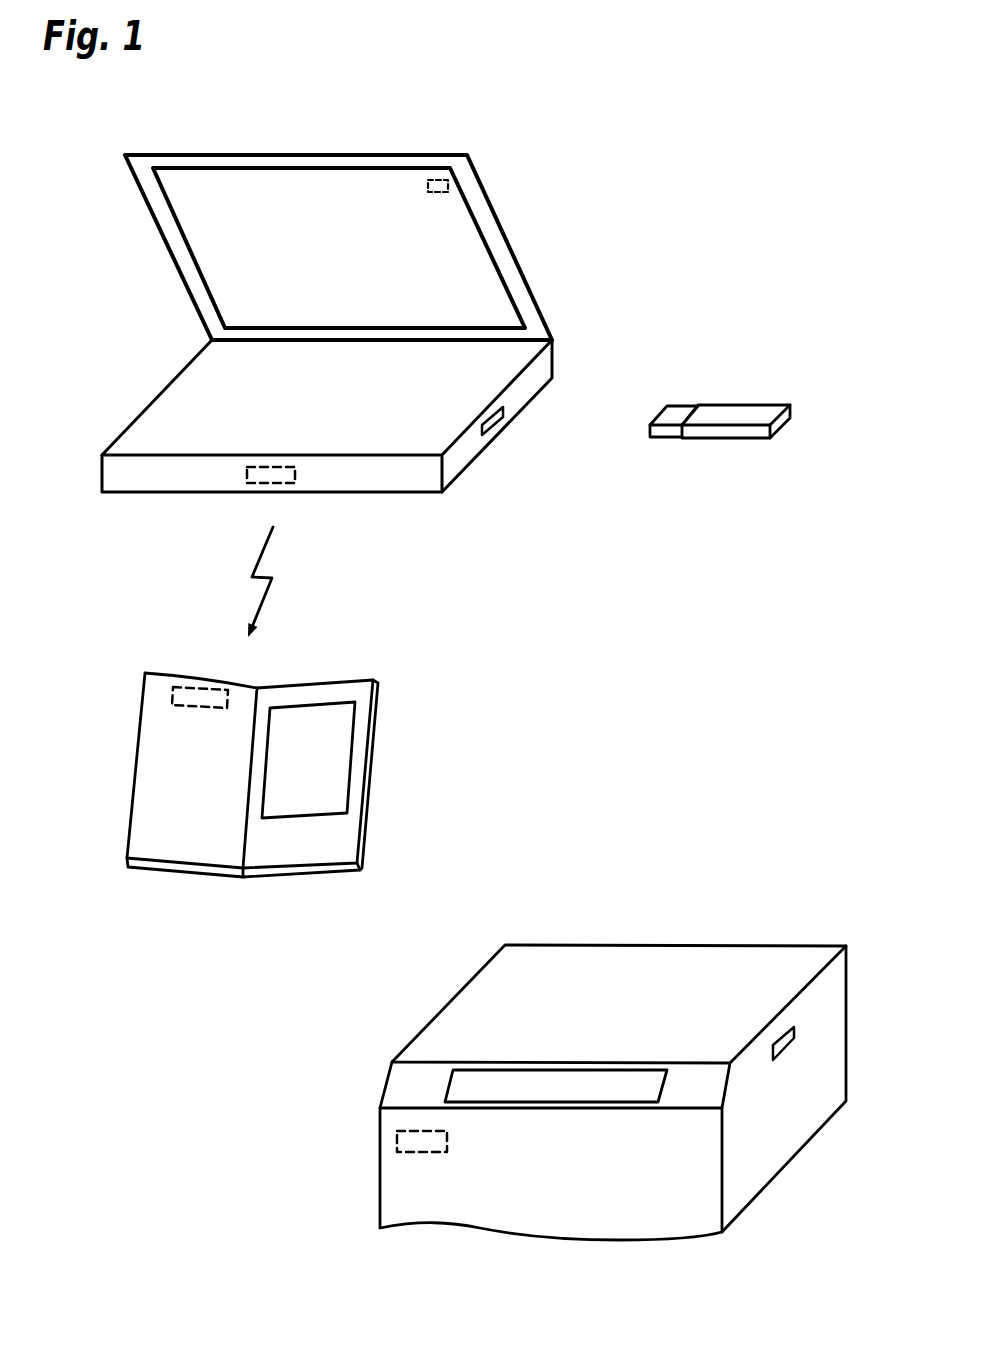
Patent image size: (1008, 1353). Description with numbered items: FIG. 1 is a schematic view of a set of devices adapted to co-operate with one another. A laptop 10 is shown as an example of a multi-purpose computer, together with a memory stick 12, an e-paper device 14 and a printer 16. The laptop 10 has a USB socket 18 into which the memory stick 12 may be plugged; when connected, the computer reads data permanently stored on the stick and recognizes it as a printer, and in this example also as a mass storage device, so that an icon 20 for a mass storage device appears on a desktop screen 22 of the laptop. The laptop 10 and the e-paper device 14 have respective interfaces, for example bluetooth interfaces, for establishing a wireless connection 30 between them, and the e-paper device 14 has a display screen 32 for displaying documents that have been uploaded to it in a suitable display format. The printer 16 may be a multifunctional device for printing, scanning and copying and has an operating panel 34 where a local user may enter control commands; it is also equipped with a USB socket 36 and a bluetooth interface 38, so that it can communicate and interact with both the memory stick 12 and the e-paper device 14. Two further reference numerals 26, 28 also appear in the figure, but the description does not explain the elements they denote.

The computer 10 is at (546, 165).
The portable memory device 12 is at (760, 350).
The mobile phone 14 is at (423, 682).
The printer 16 is at (699, 901).
The port 18 is at (495, 423).
The camera 20 is at (436, 180).
The display 22 is at (284, 167).
The wireless transceiver 26 is at (247, 477).
The wireless transceiver 28 is at (173, 695).
The wireless link 30 is at (270, 595).
The display 32 is at (353, 757).
The output slot 34 is at (553, 1068).
The port 36 is at (784, 1045).
The wireless transceiver 38 is at (395, 1138).